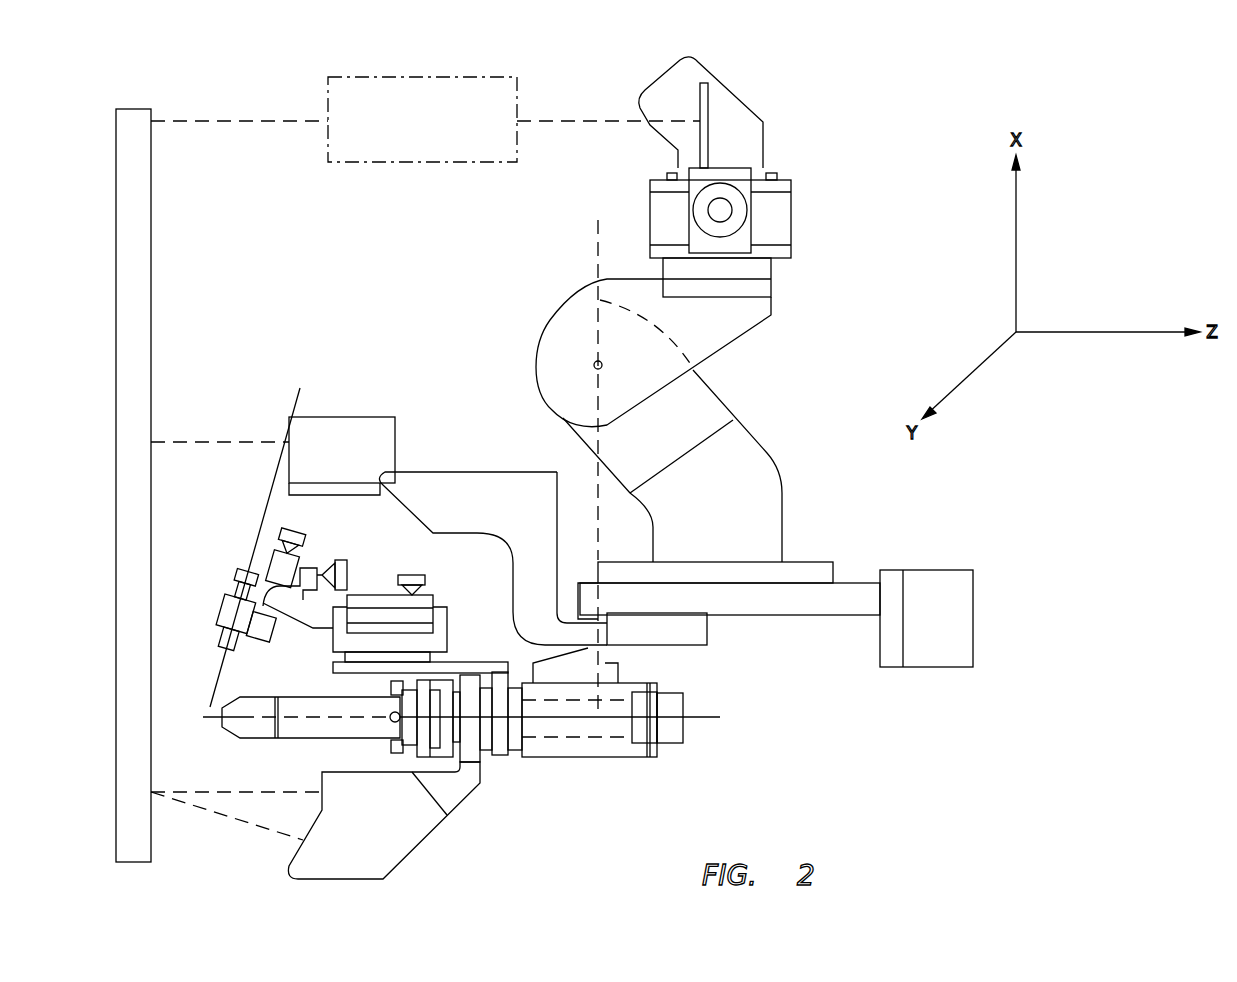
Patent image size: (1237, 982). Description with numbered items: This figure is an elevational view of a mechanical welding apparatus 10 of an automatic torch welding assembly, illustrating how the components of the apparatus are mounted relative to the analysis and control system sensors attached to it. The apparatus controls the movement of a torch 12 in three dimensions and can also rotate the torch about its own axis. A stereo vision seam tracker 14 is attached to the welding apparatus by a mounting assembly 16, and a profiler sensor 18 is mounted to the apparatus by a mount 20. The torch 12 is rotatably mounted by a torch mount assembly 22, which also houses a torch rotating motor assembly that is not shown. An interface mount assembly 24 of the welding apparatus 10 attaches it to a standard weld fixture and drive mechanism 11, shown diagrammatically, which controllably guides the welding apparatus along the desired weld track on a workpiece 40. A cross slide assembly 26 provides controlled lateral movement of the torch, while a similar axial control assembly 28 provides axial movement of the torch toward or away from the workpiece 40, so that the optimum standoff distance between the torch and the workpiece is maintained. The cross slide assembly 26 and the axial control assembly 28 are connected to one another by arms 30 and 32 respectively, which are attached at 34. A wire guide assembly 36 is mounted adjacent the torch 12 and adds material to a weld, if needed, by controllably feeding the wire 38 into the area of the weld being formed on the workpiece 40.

The welding apparatus 10 is at (833, 196).
The weld fixture and drive mechanism 11 is at (453, 76).
The torch 12 is at (313, 703).
The stereo vision seam tracker 14 is at (335, 428).
The mounting assembly 16 is at (525, 490).
The profiler sensor 18 is at (400, 838).
The mount 20 is at (452, 793).
The torch mount assembly 22 is at (605, 663).
The interface mount assembly 24 is at (728, 120).
The cross slide assembly 26 is at (757, 270).
The axial control assembly 28 is at (857, 578).
The arm 30 is at (728, 322).
The arm 32 is at (685, 412).
The attachment point 34 is at (596, 363).
The wire guide assembly 36 is at (307, 575).
The wire 38 is at (220, 665).
The workpiece 40 is at (153, 300).